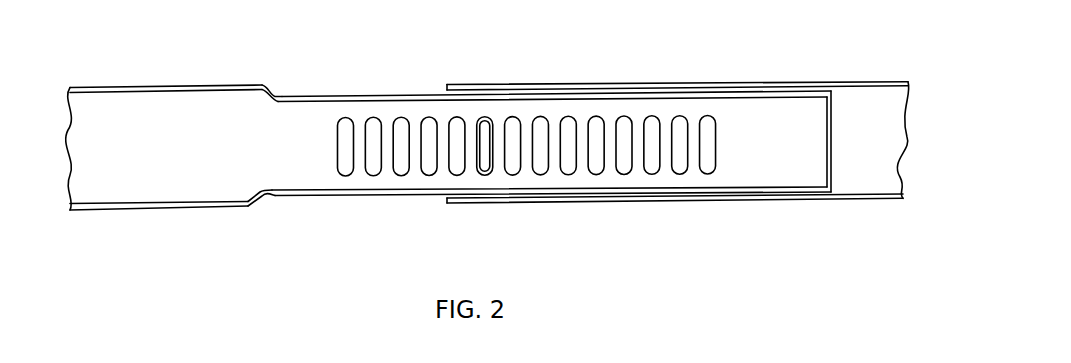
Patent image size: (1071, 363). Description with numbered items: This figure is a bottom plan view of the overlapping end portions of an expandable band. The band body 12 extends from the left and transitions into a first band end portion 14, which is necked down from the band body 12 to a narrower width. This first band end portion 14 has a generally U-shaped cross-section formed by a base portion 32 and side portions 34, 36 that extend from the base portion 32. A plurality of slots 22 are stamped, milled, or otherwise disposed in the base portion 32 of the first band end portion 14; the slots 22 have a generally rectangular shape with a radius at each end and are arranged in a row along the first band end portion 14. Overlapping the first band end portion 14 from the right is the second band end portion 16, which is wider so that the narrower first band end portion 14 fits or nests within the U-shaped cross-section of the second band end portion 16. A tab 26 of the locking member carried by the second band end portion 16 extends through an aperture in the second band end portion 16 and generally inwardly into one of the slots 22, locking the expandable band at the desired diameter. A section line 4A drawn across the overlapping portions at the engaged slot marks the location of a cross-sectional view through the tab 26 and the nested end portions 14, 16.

The band body 12 is at (100, 87).
The first band end portion 14 is at (551, 108).
The second band end portion 16 is at (650, 52).
The slots 22 is at (398, 172).
The tab 26 is at (478, 174).
The base portion 32 is at (293, 113).
The side portion 34 is at (306, 198).
The side portion 36 is at (327, 98).
The section line 4A is at (482, 107).